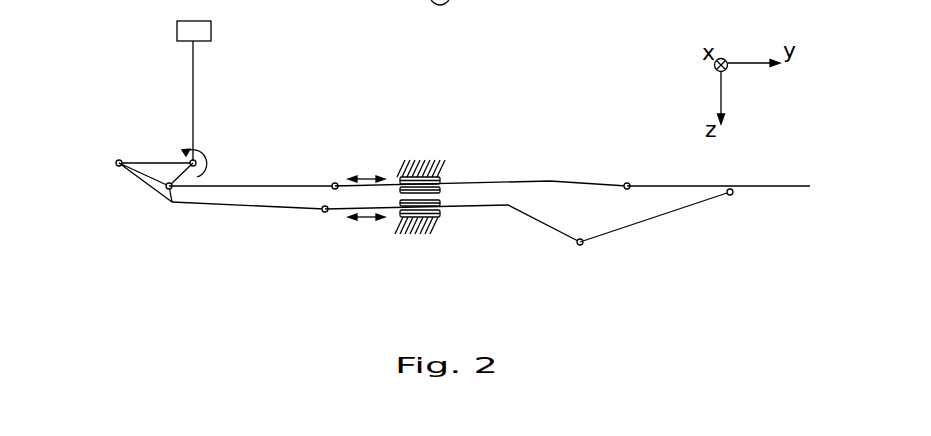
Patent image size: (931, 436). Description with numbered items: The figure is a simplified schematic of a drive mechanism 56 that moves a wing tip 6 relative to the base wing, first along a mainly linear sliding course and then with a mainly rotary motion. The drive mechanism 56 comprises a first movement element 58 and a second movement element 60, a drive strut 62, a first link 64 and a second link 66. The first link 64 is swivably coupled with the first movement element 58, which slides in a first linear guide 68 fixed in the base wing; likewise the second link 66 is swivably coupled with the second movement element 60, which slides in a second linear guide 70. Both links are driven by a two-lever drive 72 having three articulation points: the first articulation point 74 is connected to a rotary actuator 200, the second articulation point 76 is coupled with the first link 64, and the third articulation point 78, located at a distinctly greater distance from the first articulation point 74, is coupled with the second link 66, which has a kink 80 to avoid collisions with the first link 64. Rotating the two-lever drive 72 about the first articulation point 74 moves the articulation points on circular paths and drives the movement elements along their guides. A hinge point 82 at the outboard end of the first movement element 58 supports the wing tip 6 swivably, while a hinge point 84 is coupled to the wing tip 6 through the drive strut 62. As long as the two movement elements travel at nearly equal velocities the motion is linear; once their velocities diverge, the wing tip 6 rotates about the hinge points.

The rotary actuator 200 is at (212, 25).
The two-lever drive 72 is at (150, 163).
The third articulation point 78 is at (115, 157).
The first articulation point 74 is at (198, 150).
The kink 80 is at (143, 208).
The second articulation point 76 is at (175, 203).
The first link 64 is at (227, 185).
The second link 66 is at (257, 208).
The first movement element 58 is at (505, 183).
The second movement element 60 is at (470, 208).
The first linear guide 68 is at (420, 177).
The second linear guide 70 is at (418, 216).
The drive mechanism 56 is at (482, 108).
The hinge point 82 is at (630, 183).
The wing tip 6 is at (760, 186).
The drive strut 62 is at (662, 215).
The hinge point 84 is at (732, 197).